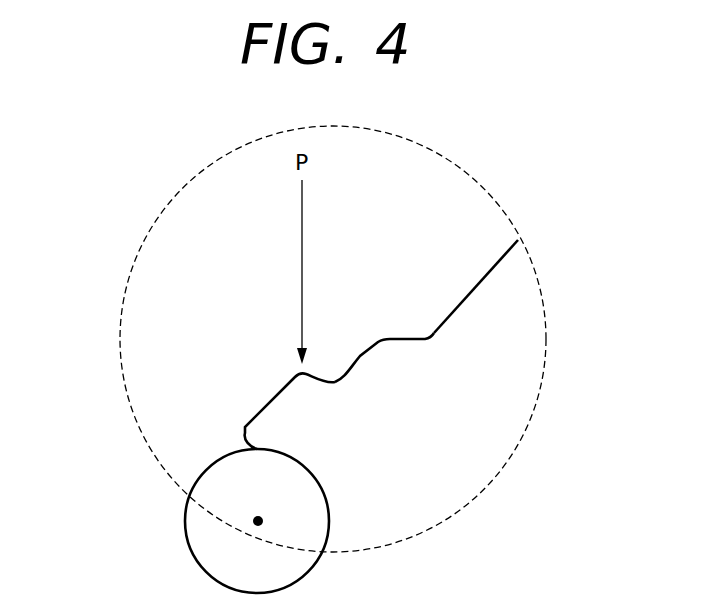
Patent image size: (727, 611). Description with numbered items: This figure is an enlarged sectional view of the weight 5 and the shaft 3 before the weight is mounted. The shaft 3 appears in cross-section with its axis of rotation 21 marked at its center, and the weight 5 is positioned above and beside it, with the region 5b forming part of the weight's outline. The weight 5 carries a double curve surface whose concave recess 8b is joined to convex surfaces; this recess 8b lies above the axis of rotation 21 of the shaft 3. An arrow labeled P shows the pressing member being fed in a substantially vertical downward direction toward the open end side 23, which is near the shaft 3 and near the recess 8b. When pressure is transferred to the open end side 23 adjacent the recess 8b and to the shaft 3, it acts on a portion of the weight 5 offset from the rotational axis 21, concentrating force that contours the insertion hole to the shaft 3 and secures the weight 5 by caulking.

The shaft 3 is at (203, 547).
The weight 5 is at (505, 338).
The end portion of lever 5b is at (479, 277).
The recess 8b is at (335, 367).
The axis of rotation 21 is at (263, 519).
The open end side 23 is at (315, 375).